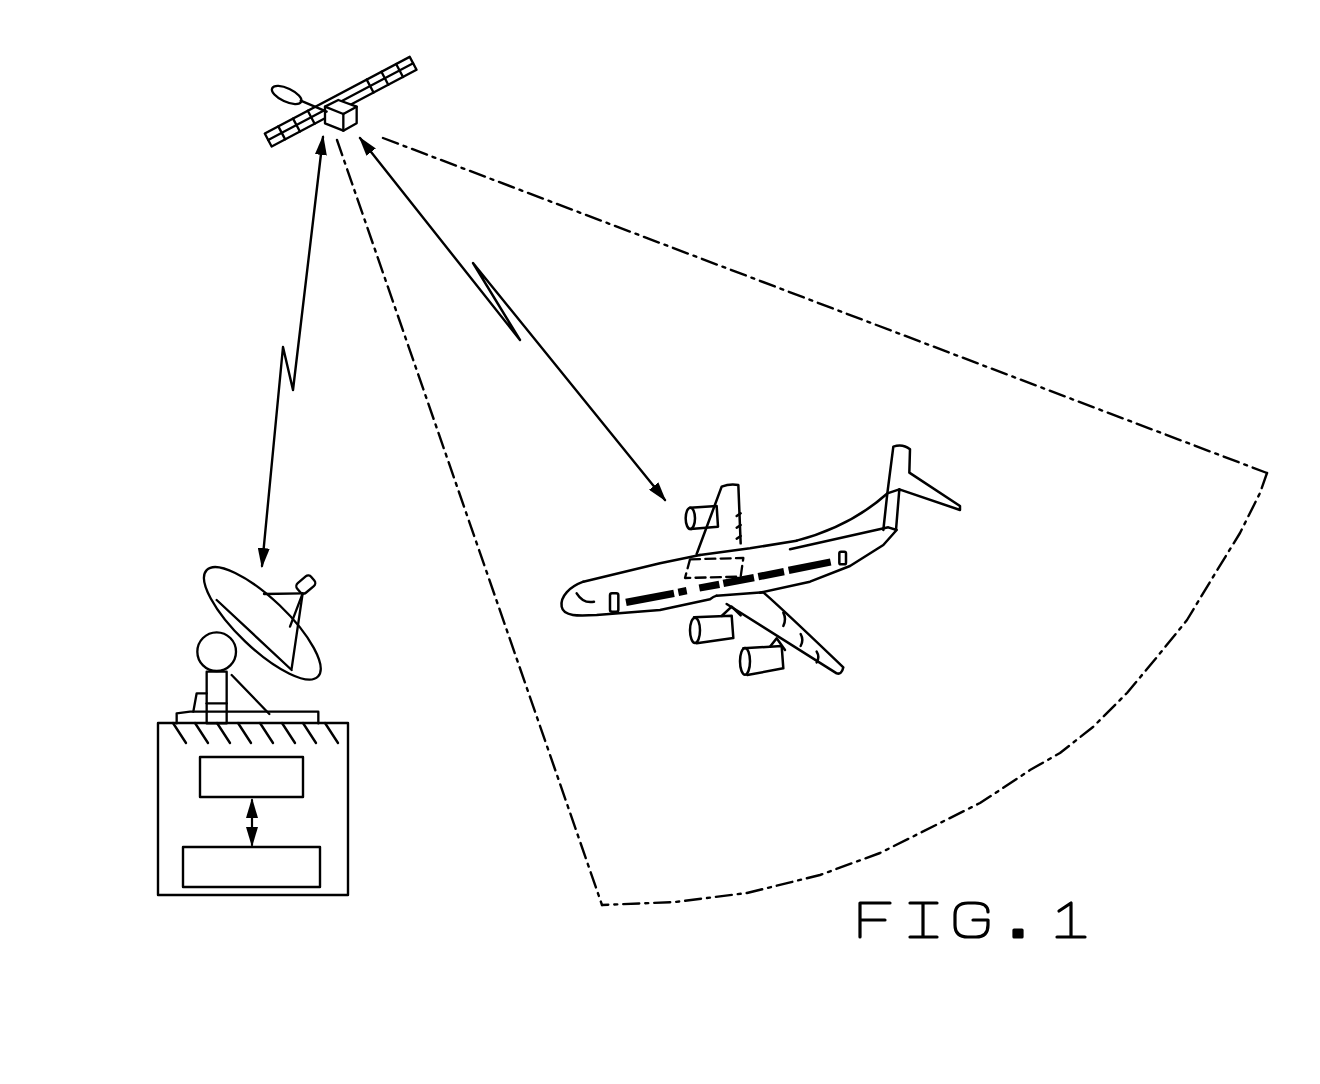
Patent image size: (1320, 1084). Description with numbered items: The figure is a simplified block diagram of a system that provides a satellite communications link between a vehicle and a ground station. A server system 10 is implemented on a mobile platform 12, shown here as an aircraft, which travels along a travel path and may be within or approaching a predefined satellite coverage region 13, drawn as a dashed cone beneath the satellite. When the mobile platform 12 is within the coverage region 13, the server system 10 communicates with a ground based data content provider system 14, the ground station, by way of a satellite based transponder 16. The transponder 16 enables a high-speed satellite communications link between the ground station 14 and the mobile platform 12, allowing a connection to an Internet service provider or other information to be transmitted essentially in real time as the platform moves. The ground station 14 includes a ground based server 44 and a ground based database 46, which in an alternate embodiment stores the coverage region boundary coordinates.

The server system 10 is at (747, 558).
The mobile platform 12 is at (647, 573).
The satellite coverage region 13 is at (673, 250).
The ground based data content provider system 14 is at (262, 735).
The satellite based transponder 16 is at (320, 112).
The ground based server 44 is at (303, 773).
The ground based database 46 is at (320, 867).